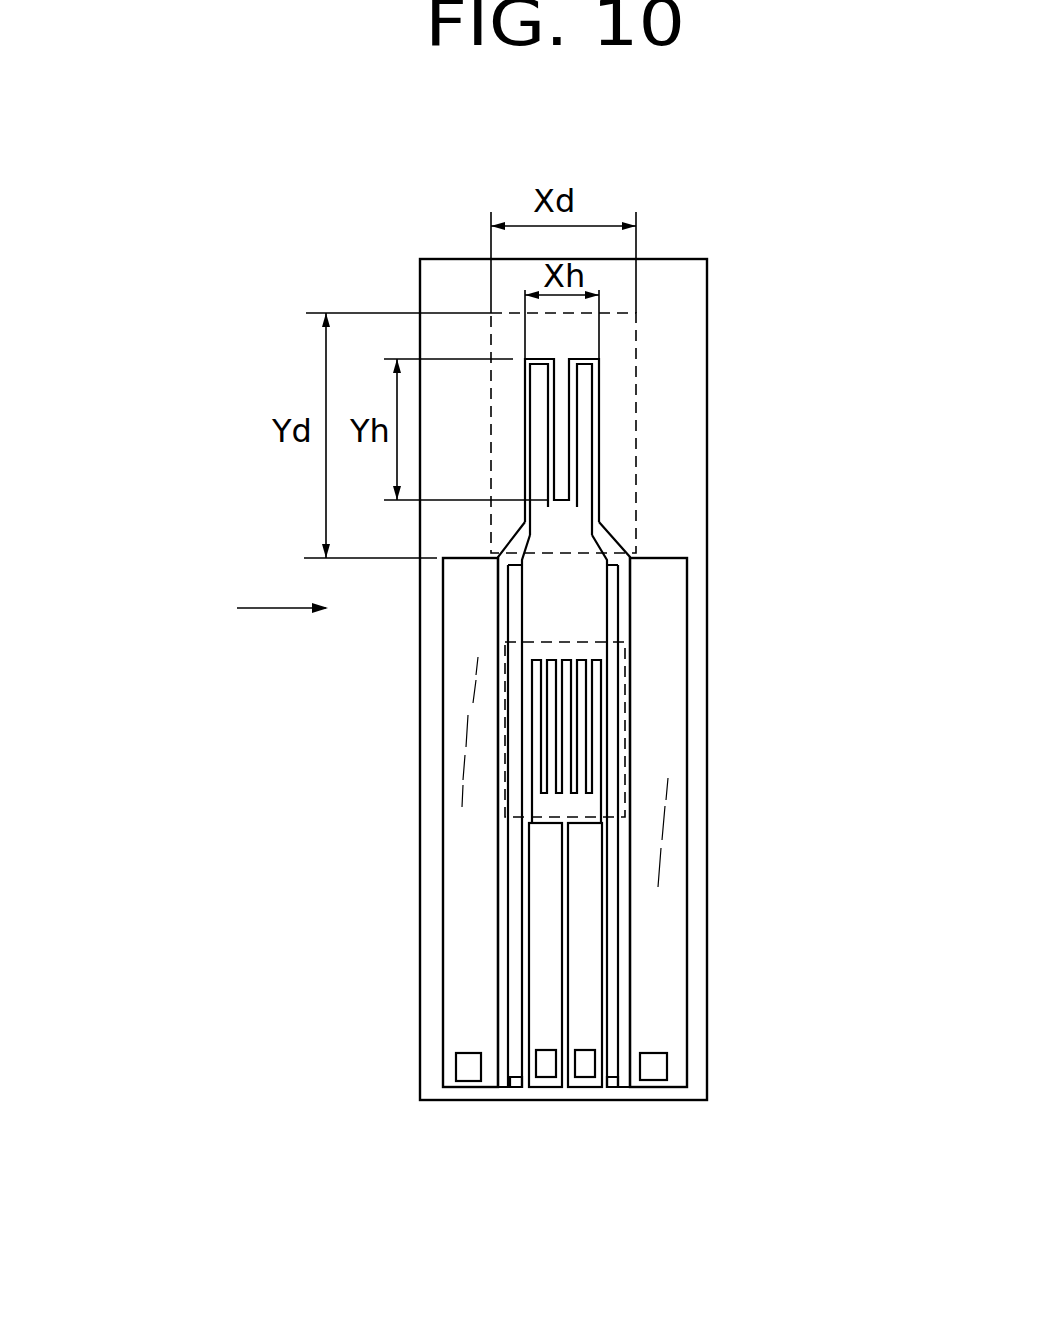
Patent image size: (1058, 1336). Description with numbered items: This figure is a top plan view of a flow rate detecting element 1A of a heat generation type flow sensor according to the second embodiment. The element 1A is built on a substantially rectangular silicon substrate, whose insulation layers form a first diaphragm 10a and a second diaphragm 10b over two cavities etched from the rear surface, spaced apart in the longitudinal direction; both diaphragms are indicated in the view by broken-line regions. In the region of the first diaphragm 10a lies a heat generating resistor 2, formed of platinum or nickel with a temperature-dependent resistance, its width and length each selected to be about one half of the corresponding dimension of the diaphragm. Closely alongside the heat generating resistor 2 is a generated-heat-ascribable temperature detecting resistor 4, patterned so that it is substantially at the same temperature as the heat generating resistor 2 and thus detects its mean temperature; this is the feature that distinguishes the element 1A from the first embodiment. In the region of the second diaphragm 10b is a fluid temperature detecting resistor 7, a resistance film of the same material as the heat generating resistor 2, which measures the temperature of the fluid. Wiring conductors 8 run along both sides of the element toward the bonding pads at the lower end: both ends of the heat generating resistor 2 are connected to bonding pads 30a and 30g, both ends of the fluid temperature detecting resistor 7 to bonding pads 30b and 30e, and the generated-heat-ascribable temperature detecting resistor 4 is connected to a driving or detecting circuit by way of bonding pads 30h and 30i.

The flow rate detecting element 1A is at (692, 247).
The first diaphragm 10a is at (636, 360).
The second diaphragm 10b is at (625, 672).
The heat generating resistor 2 is at (593, 429).
The generated-heat-ascribable temperature detecting resistor 4 is at (593, 513).
The fluid temperature detecting resistor 7 is at (578, 730).
The wiring conductors 8 is at (467, 927).
The bonding pad 30a is at (548, 1070).
The bonding pad 30b is at (468, 1073).
The bonding pad 30e is at (652, 1068).
The bonding pad 30g is at (585, 1068).
The bonding pad 30h is at (516, 1078).
The bonding pad 30i is at (614, 1078).